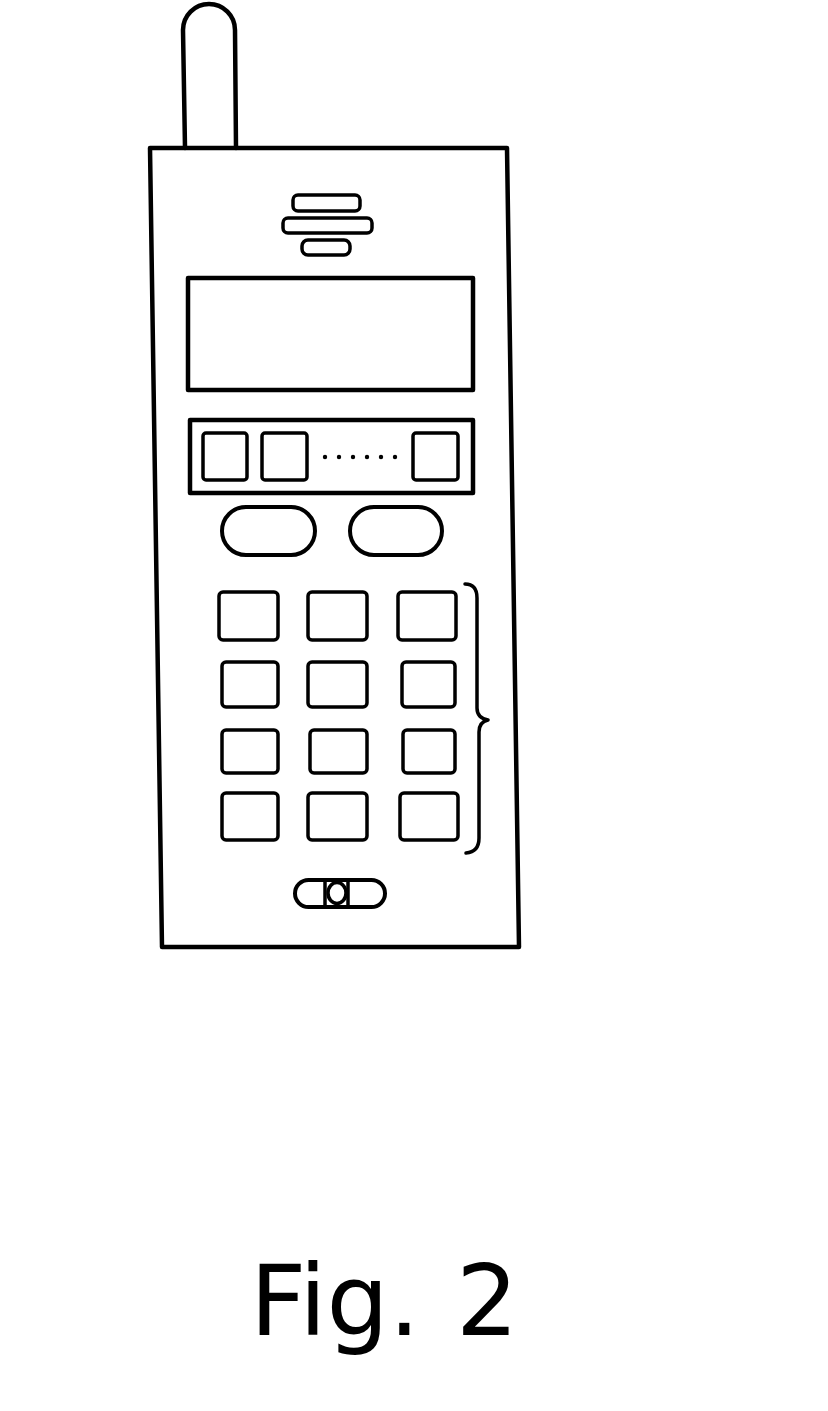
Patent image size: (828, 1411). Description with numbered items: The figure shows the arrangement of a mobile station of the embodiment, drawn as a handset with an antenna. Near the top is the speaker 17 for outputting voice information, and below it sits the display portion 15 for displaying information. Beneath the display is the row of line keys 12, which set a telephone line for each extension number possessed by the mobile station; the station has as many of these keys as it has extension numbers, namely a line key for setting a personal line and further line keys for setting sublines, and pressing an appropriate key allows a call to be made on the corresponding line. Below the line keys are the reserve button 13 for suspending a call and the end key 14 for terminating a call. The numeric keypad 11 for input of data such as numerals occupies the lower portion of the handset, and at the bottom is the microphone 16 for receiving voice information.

The numeric keypad 11 is at (498, 718).
The line keys 12 is at (477, 435).
The reserve button 13 is at (222, 532).
The end key 14 is at (442, 535).
The display portion 15 is at (460, 317).
The microphone 16 is at (385, 893).
The speaker 17 is at (348, 195).